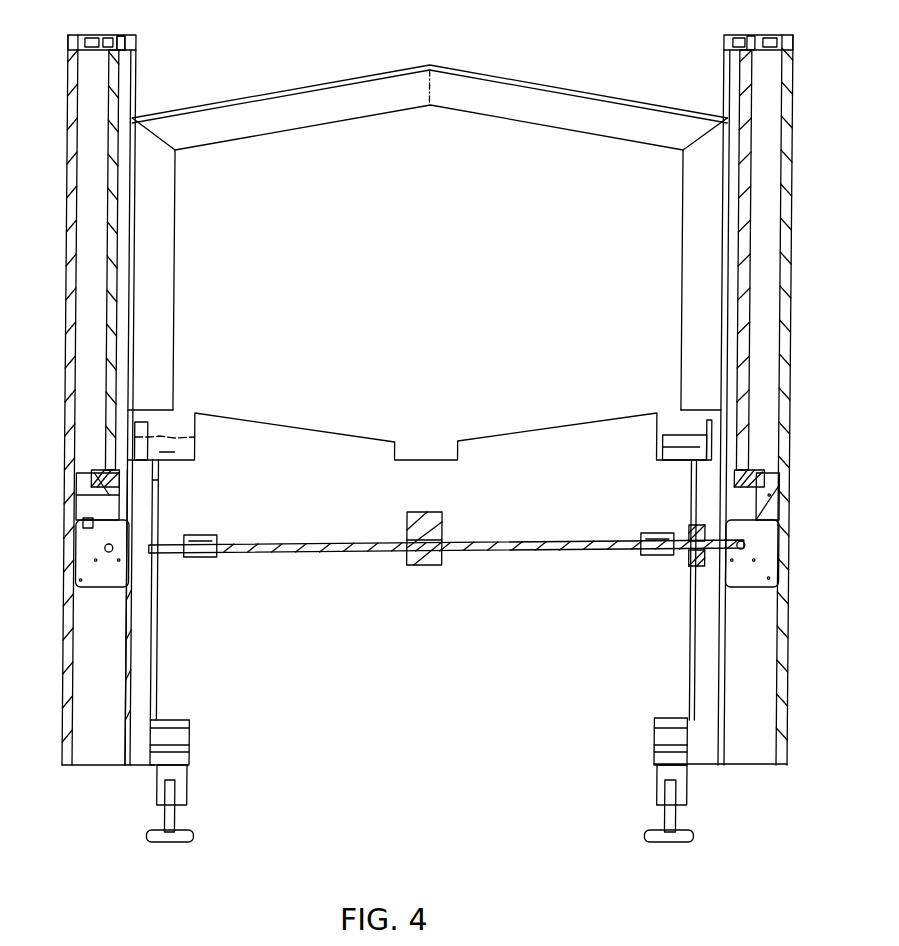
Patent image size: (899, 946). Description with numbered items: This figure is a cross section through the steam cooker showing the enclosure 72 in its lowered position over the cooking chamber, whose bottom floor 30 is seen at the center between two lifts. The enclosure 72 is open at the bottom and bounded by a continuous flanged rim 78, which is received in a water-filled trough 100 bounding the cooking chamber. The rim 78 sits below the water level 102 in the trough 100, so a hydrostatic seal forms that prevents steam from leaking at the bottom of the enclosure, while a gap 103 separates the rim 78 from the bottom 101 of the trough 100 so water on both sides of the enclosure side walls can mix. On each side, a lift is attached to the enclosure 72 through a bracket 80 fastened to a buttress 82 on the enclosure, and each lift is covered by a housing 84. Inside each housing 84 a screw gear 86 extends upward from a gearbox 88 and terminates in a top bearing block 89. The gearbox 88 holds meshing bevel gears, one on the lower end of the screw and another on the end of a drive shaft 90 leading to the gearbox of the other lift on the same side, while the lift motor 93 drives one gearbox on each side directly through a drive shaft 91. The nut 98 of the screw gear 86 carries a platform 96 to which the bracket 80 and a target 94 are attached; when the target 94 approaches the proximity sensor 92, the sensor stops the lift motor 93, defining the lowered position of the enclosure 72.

The bottom floor 30 is at (487, 440).
The enclosure 72 is at (176, 340).
The flanged rim 78 is at (680, 460).
The bracket 80 is at (740, 356).
The buttress 82 is at (510, 82).
The housing 84 is at (132, 680).
The screw gear 86 is at (120, 84).
The gearbox 88 is at (768, 568).
The top bearing block 89 is at (122, 42).
The drive shaft 90 is at (747, 545).
The drive shaft 91 is at (500, 544).
The proximity sensor 92 is at (80, 530).
The lift motor 93 is at (408, 524).
The target 94 is at (78, 494).
The platform 96 is at (86, 480).
The nut 98 is at (757, 494).
The trough 100 is at (660, 447).
The bottom of the trough 101 is at (170, 473).
The water level 102 is at (667, 433).
The gap 103 is at (176, 458).